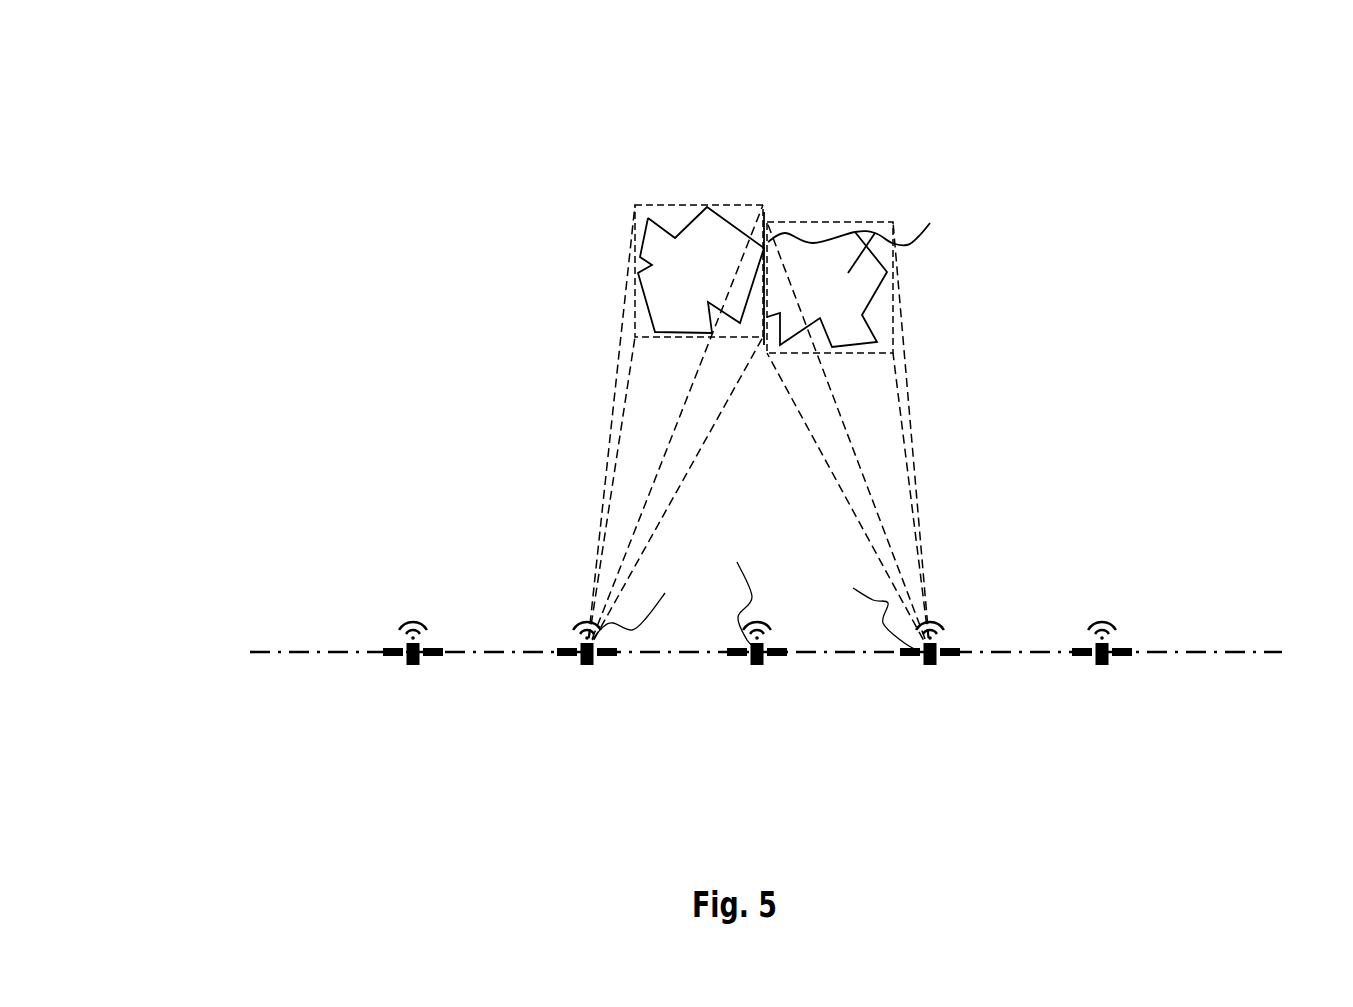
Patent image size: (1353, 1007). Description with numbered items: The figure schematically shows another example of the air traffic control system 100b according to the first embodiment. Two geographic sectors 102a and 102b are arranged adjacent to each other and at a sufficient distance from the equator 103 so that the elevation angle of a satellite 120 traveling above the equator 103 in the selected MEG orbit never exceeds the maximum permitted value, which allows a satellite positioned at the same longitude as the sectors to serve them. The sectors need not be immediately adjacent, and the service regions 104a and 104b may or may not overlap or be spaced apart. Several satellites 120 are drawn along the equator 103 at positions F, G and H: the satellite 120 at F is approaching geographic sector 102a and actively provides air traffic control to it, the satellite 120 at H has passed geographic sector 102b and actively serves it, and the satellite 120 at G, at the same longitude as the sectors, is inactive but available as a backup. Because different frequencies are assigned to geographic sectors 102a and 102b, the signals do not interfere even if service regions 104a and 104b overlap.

The air traffic control system 100b is at (1207, 163).
The geographic sector 102a is at (662, 248).
The geographic sector 102b is at (930, 223).
The equator 103 is at (313, 647).
The service region 104a is at (733, 205).
The service region 104b is at (812, 222).
The satellite 120 is at (1097, 665).